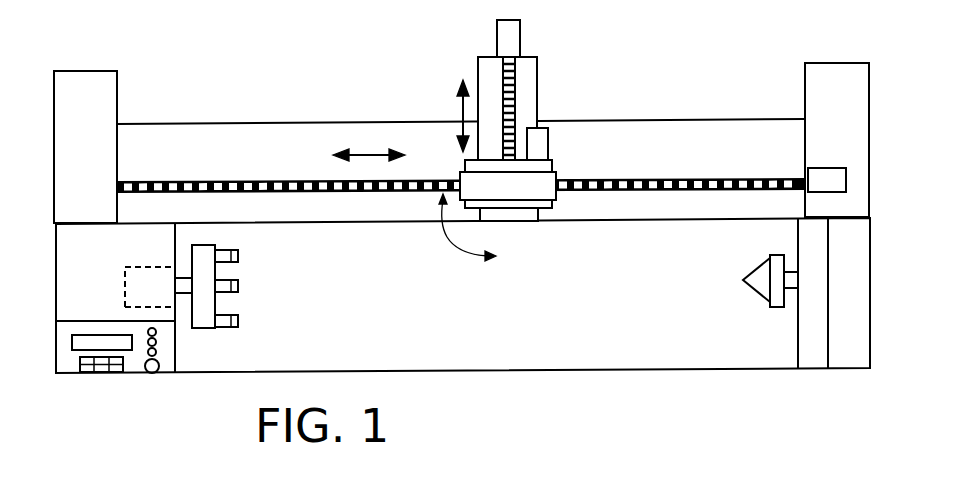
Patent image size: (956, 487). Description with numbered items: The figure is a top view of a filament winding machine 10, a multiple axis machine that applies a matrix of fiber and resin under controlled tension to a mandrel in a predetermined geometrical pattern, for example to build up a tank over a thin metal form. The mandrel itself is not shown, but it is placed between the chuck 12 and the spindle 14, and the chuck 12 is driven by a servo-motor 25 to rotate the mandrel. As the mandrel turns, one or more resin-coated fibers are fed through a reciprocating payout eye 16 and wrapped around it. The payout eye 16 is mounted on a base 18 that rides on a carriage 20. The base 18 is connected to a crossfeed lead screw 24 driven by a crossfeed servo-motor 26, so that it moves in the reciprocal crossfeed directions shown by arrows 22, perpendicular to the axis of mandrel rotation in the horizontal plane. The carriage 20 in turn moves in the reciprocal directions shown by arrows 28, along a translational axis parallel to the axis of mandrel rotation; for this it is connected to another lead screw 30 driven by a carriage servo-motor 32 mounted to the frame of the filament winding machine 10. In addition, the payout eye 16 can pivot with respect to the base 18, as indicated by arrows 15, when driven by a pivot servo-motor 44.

The filament winding machine 10 is at (168, 392).
The chuck 12 is at (203, 325).
The spindle 14 is at (760, 288).
The arrows 15 is at (447, 237).
The payout eye 16 is at (520, 195).
The base 18 is at (552, 166).
The carriage 20 is at (523, 75).
The arrows 22 is at (463, 112).
The crossfeed lead screw 24 is at (510, 103).
The servo-motor 25 is at (140, 268).
The crossfeed servo-motor 26 is at (518, 42).
The arrows 28 is at (370, 150).
The lead screw 30 is at (707, 177).
The carriage servo-motor 32 is at (825, 175).
The pivot servo-motor 44 is at (540, 144).